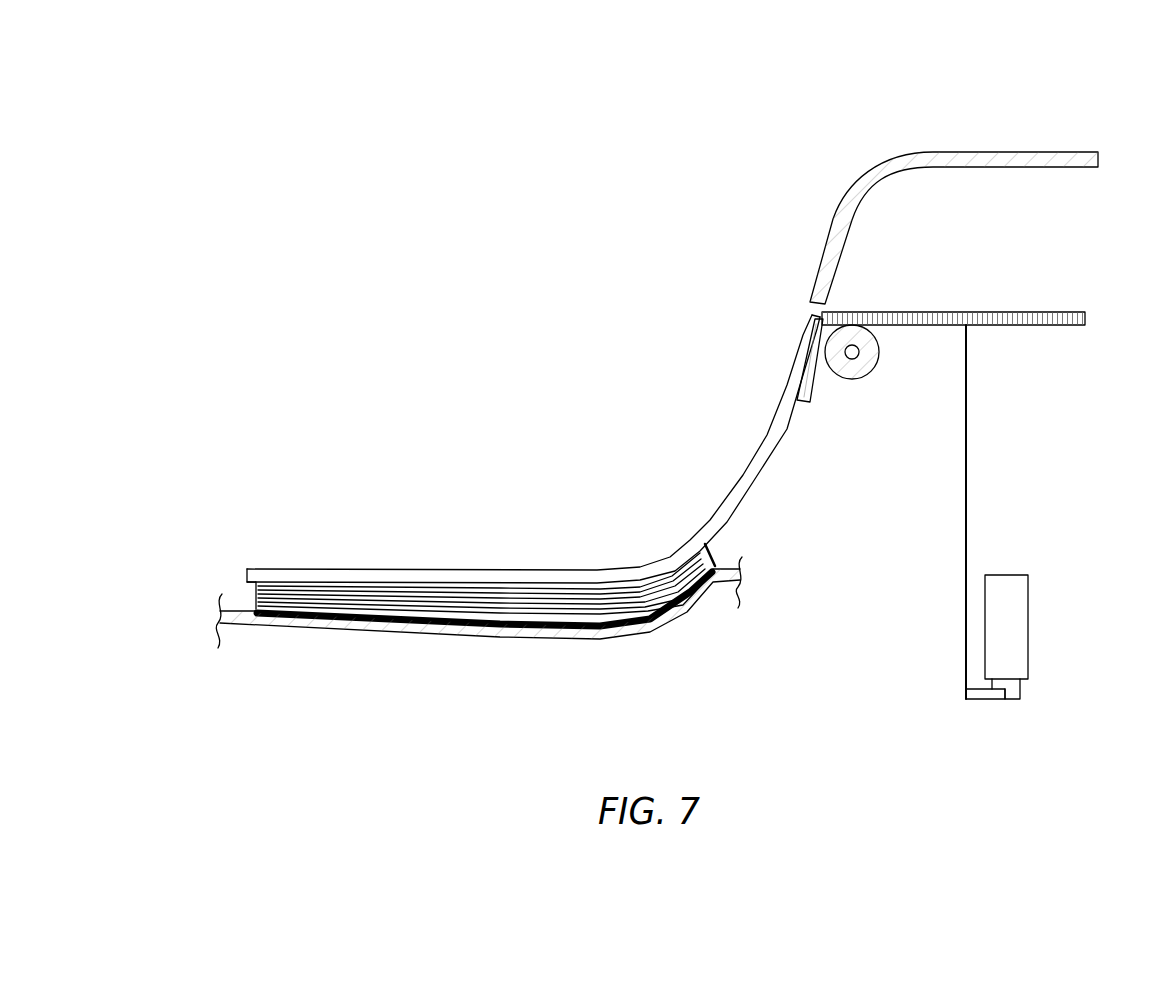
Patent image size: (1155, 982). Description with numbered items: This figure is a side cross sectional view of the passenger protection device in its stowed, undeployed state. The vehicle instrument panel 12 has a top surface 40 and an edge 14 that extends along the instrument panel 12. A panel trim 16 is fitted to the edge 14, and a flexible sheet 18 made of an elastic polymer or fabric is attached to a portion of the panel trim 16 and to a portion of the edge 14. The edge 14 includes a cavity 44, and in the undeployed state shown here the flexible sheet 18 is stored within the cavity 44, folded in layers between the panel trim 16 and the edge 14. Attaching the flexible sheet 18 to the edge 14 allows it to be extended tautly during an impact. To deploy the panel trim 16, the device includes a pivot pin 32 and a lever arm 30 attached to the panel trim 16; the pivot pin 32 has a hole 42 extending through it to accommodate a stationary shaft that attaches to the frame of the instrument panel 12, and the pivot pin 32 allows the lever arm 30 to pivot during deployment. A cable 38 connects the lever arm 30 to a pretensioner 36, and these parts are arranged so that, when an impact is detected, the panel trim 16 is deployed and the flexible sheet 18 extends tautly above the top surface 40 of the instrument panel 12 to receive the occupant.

The vehicle instrument panel 12 is at (984, 146).
The edge 14 is at (477, 636).
The panel trim 16 is at (295, 565).
The flexible sheet 18 is at (372, 590).
The lever arm 30 is at (1052, 310).
The pivot pin 32 is at (852, 378).
The pretensioner 36 is at (1028, 615).
The cable 38 is at (967, 415).
The top surface 40 is at (1060, 132).
The hole 42 is at (860, 351).
The cavity 44 is at (722, 545).